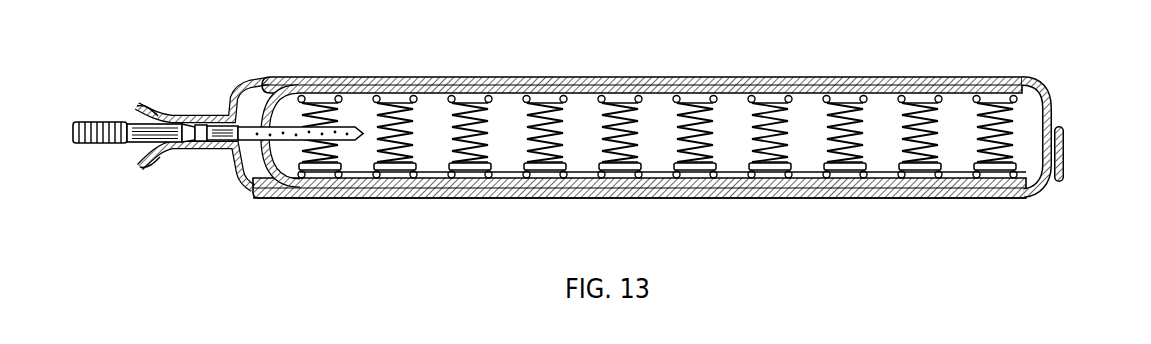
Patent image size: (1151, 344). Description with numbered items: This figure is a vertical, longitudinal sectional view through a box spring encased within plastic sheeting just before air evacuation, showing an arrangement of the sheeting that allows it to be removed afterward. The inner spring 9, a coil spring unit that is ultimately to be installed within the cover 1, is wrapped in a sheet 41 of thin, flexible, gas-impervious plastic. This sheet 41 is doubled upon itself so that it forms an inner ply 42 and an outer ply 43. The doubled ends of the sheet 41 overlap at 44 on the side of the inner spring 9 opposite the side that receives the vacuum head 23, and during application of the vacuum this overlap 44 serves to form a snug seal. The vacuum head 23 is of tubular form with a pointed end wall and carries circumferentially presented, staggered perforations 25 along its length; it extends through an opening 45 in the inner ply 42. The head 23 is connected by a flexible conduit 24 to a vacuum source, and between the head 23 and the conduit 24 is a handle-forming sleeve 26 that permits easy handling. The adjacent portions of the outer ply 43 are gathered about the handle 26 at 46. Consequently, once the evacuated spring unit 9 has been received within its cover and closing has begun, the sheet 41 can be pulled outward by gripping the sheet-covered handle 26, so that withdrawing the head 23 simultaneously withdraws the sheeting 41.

The cover 1 is at (362, 130).
The inner spring 9 is at (581, 118).
The vacuum head 23 is at (293, 129).
The flexible conduit 24 is at (87, 120).
The perforations 25 is at (338, 134).
The handle-forming sleeve 26 is at (216, 124).
The sheet 41 is at (1037, 87).
The inner ply 42 is at (1000, 188).
The outer ply 43 is at (977, 200).
The overlap 44 is at (1064, 137).
The opening 45 is at (262, 120).
The gathered portion 46 is at (198, 143).